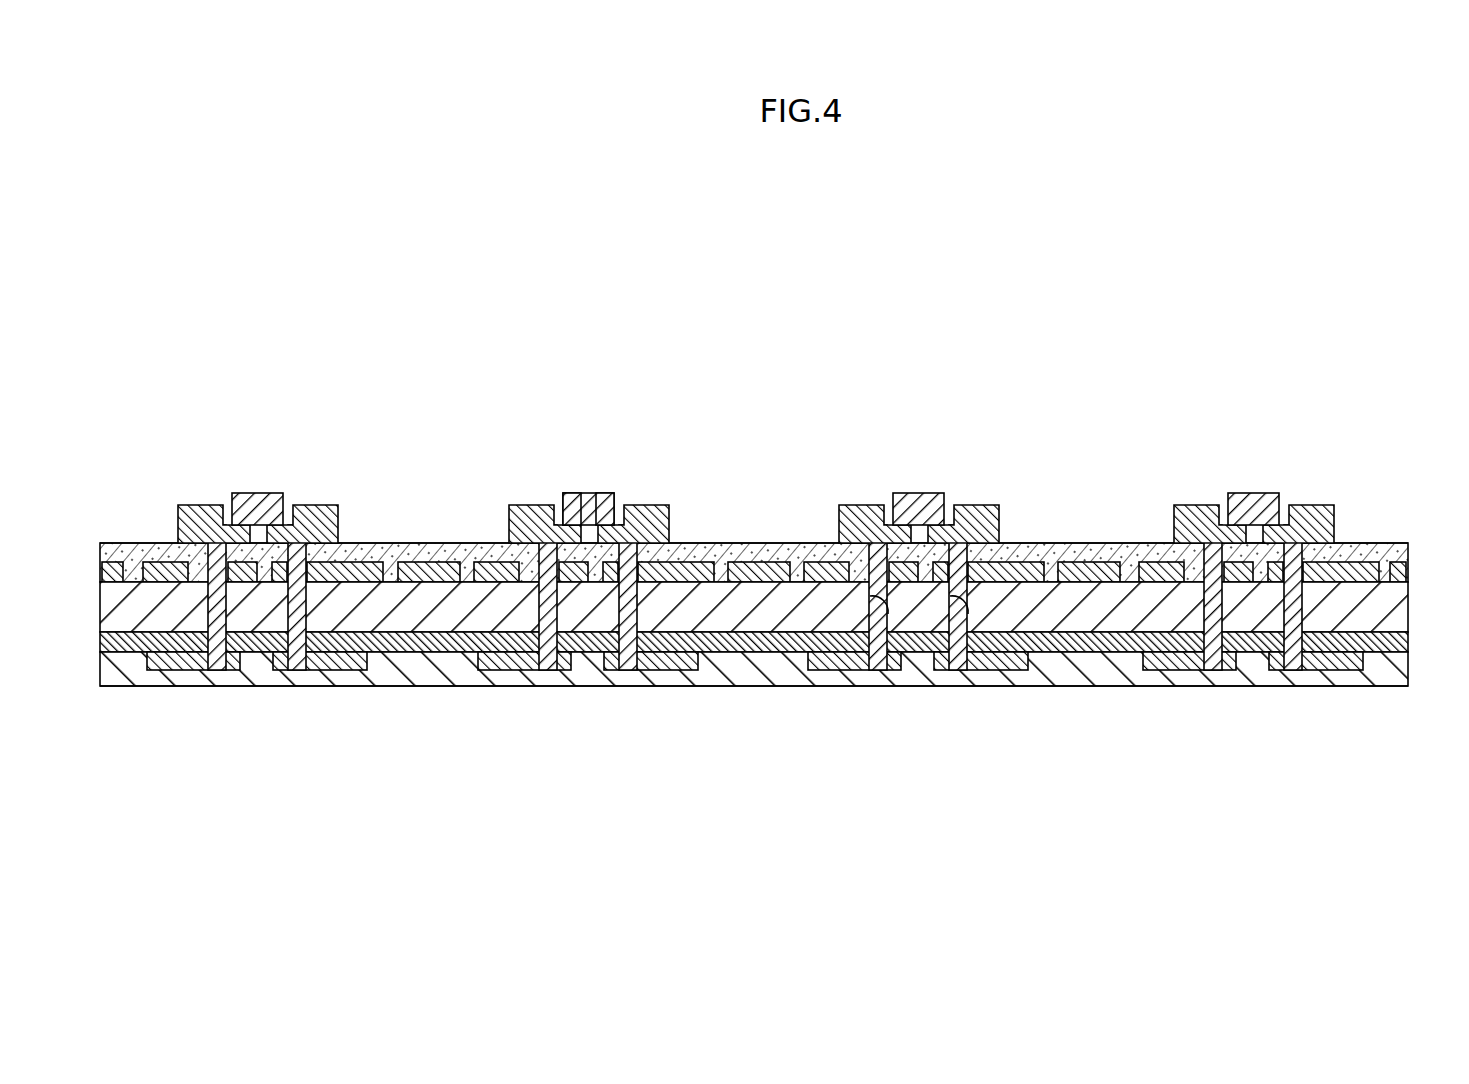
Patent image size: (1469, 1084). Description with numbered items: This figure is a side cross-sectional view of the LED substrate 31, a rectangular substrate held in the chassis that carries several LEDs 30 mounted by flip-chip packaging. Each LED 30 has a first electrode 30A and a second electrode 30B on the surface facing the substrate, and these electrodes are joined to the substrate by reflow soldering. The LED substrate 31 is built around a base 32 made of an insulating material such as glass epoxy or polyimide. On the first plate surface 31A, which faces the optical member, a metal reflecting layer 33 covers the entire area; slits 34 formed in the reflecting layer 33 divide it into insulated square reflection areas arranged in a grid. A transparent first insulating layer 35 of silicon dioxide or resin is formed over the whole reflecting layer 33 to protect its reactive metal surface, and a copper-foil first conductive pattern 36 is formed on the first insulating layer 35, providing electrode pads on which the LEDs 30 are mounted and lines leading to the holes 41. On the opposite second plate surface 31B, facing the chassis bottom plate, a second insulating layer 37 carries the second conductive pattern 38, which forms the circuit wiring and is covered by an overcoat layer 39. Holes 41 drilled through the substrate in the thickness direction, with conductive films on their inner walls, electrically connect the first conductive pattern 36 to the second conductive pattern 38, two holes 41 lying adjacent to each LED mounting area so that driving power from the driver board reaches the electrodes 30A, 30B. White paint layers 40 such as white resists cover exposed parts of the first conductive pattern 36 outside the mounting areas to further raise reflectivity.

The LED 30 is at (755, 441).
The first electrode 30A is at (566, 494).
The second electrode 30B is at (609, 494).
The LED substrate 31 is at (783, 589).
The first plate surface 31A is at (1038, 543).
The second plate surface 31B is at (1083, 686).
The base 32 is at (1393, 605).
The reflecting layer 33 is at (784, 528).
The slits 34 is at (1110, 577).
The first insulating layer 35 is at (1388, 544).
The first conductive pattern 36 is at (1318, 532).
The second insulating layer 37 is at (1400, 642).
The second conductive pattern 38 is at (1328, 664).
The overcoat layer 39 is at (431, 679).
The white paint layer 40 is at (860, 507).
The holes 41 is at (903, 655).